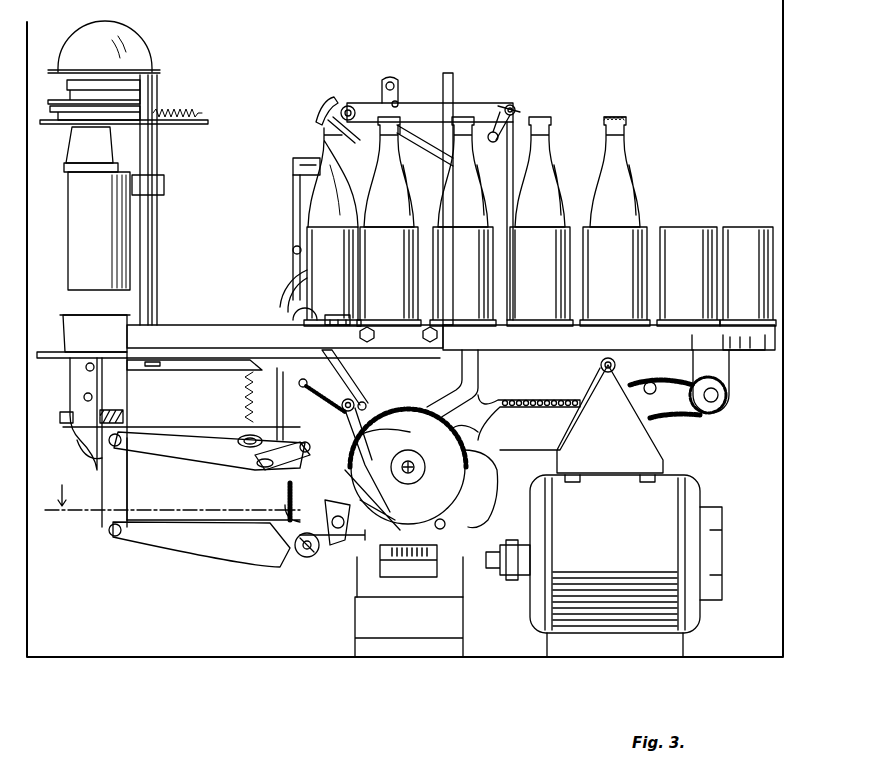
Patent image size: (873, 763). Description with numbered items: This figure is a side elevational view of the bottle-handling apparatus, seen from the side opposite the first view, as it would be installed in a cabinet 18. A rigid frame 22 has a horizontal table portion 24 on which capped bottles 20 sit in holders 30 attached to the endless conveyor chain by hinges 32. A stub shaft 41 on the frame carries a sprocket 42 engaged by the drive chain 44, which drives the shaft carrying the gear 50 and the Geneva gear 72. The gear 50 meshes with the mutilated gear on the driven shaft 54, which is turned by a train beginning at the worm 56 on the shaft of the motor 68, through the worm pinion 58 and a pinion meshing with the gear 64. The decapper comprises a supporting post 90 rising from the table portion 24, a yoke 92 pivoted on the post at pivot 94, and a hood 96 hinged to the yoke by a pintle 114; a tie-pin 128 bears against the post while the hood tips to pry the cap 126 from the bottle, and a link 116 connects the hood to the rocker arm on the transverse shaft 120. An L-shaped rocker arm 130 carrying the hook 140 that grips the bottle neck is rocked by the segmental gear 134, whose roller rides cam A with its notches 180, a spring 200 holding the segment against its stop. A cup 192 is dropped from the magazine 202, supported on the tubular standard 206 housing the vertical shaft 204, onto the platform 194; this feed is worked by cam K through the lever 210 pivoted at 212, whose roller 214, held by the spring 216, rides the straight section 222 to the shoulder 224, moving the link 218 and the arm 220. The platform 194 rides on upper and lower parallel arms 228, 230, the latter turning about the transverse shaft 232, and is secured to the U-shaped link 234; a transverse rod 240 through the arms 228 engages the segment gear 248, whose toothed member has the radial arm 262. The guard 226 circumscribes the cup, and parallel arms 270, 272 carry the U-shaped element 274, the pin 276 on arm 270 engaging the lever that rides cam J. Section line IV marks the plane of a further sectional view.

The cabinet 18 is at (782, 575).
The capped bottle 20 is at (618, 180).
The rigid frame 22 is at (285, 333).
The table portion 24 is at (609, 337).
The holder 30 is at (684, 236).
The hinge 32 is at (386, 322).
The stub shaft 41 is at (718, 394).
The sprocket 42 is at (705, 418).
The drive chain 44 is at (563, 400).
The gear 50 is at (500, 397).
The driven shaft 54 is at (415, 468).
The worm 56 is at (414, 572).
The worm pinion 58 is at (446, 533).
The gear 64 is at (465, 434).
The motor 68 is at (626, 566).
The Geneva gear 72 is at (504, 410).
The supporting post 90 is at (510, 210).
The yoke 92 is at (455, 108).
The pivot 94 is at (514, 110).
The hood 96 is at (332, 98).
The pintle 114 is at (352, 106).
The link 116 is at (480, 368).
The transverse shaft 120 is at (296, 457).
The cap 126 is at (627, 120).
The tie-pin 128 is at (498, 140).
The L-shaped rocker arm 130 is at (306, 160).
The segmental gear 134 is at (235, 397).
The hook 140 is at (355, 182).
The notch 180 is at (507, 540).
The cup 192 is at (88, 144).
The platform 194 is at (62, 423).
The spring 200 is at (213, 520).
The magazine 202 is at (150, 66).
The vertical shaft 204 is at (152, 368).
The tubular standard 206 is at (157, 297).
The lever 210 is at (345, 390).
The pivot 212 is at (317, 401).
The roller 214 is at (367, 455).
The spring 216 is at (267, 404).
The link 218 is at (266, 352).
The arm 220 is at (195, 370).
The straight section 222 is at (381, 500).
The shoulder 224 is at (385, 433).
The guard 226 is at (40, 352).
The upper parallel arm 228 is at (203, 432).
The lower parallel arm 230 is at (228, 518).
The transverse shaft 232 is at (307, 557).
The U-shaped link 234 is at (129, 415).
The transverse rod 240 is at (236, 436).
The segment gear 248 is at (271, 501).
The radial arm 262 is at (336, 530).
The parallel arm 270 is at (198, 455).
The parallel arm 272 is at (210, 556).
The U-shaped element 274 is at (100, 462).
The pin 276 is at (266, 456).
The cam A is at (490, 500).
The section line IV is at (207, 520).